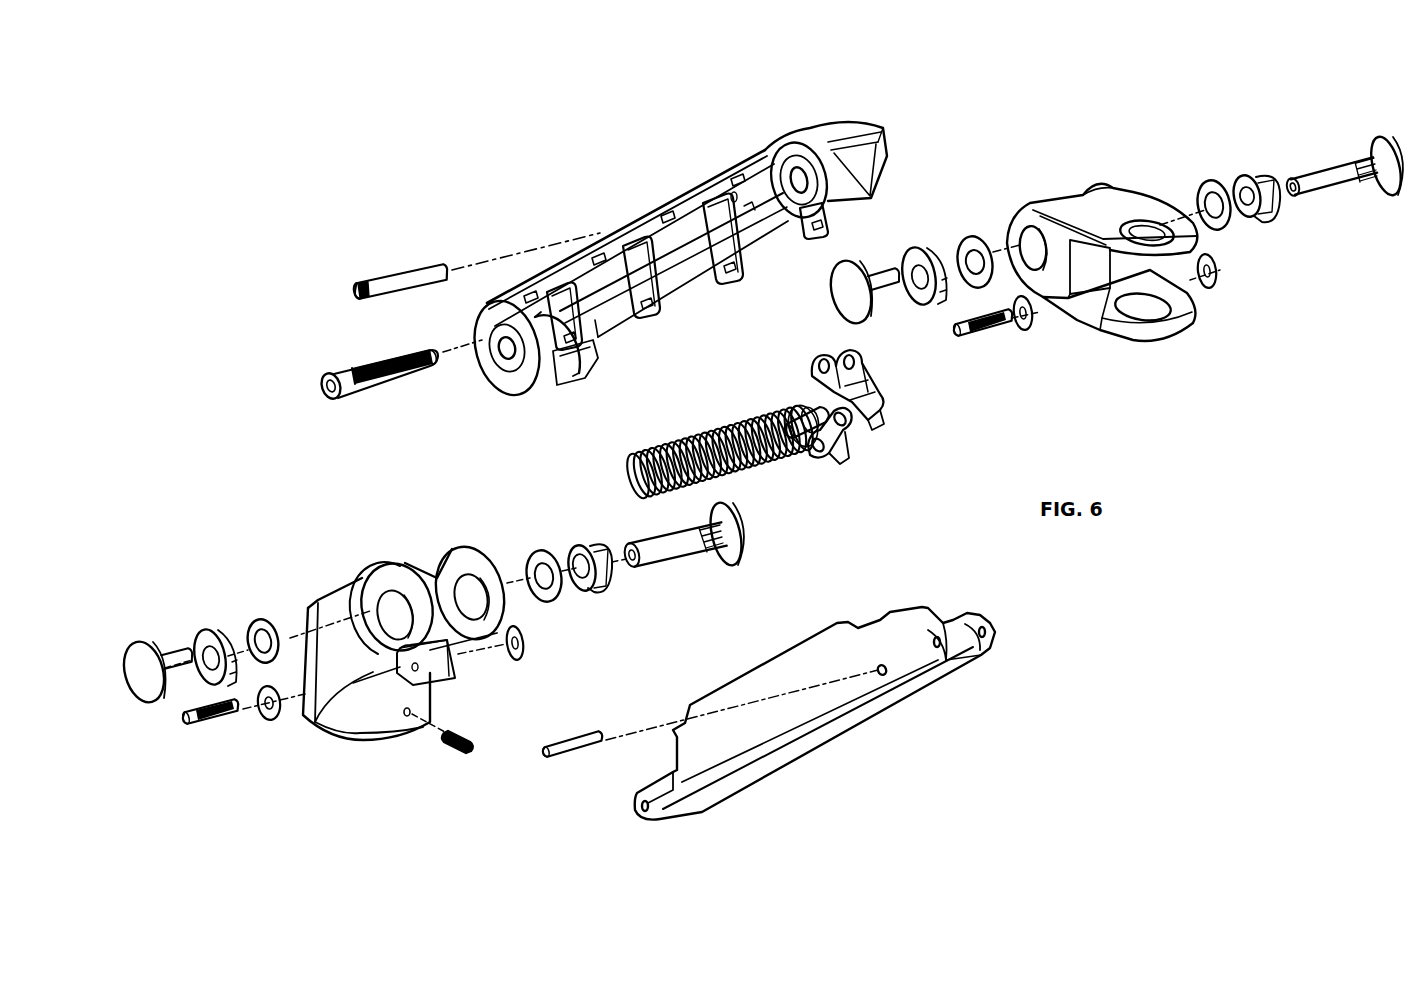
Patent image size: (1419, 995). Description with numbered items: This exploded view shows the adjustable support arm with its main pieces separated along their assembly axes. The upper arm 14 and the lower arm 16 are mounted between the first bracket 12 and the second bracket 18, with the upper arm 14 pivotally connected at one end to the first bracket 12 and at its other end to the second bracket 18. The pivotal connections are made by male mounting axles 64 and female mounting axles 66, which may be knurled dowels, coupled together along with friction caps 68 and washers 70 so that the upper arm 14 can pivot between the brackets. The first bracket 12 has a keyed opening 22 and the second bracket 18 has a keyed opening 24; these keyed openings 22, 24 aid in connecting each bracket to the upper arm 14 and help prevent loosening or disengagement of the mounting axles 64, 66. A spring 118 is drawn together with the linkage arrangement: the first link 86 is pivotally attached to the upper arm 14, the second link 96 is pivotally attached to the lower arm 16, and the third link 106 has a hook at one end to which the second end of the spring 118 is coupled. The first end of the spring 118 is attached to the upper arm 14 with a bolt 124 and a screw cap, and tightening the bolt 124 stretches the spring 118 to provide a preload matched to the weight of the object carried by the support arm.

The first bracket 12 is at (383, 713).
The upper arm 14 is at (590, 165).
The lower arm 16 is at (872, 745).
The second bracket 18 is at (1127, 200).
The keyed opening 22 is at (466, 582).
The keyed opening 24 is at (1030, 232).
The male mounting axle 64 is at (850, 283).
The female mounting axle 66 is at (1356, 172).
The friction cap 68 is at (920, 251).
The washer 70 is at (975, 246).
The first link 86 is at (848, 361).
The second link 96 is at (832, 446).
The third link 106 is at (820, 402).
The spring 118 is at (720, 430).
The bolt 124 is at (385, 378).